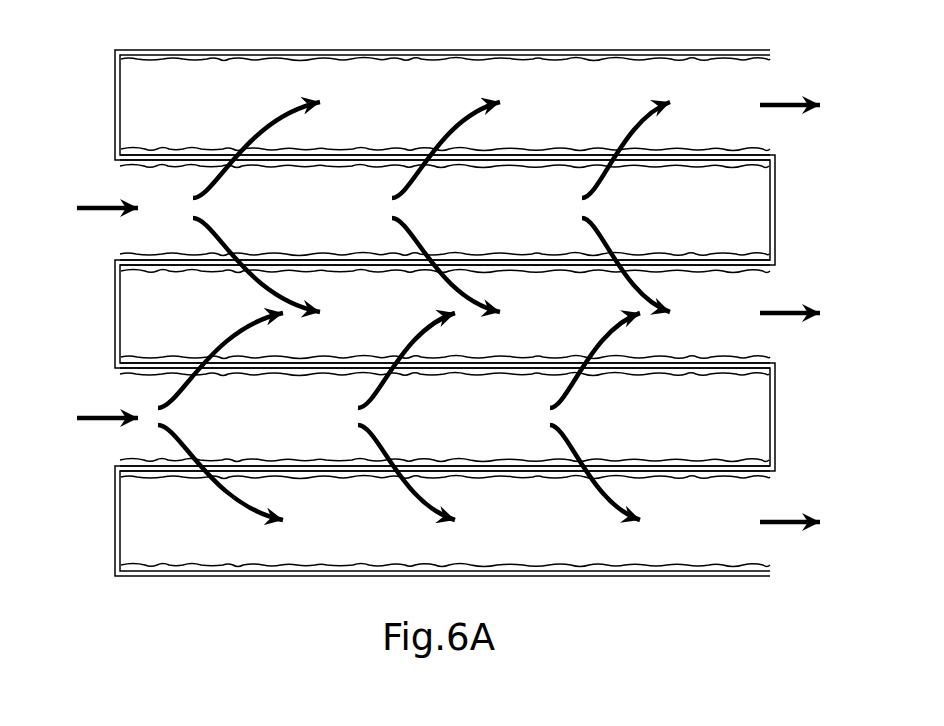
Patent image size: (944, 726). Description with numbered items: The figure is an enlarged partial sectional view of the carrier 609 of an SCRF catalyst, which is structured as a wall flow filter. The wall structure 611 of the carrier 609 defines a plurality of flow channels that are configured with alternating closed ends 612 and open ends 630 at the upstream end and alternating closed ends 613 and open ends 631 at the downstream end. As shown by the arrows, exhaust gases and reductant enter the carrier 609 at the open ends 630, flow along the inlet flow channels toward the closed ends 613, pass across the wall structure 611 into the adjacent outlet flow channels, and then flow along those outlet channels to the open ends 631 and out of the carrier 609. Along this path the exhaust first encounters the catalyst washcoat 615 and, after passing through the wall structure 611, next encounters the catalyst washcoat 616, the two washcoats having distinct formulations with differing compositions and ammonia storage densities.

The carrier 609 is at (802, 43).
The wall structure 611 is at (113, 43).
The closed ends 612 is at (115, 98).
The closed ends 613 is at (777, 199).
The catalyst washcoat 615 is at (150, 61).
The catalyst washcoat 616 is at (315, 166).
The open ends 630 is at (116, 180).
The open ends 631 is at (777, 136).